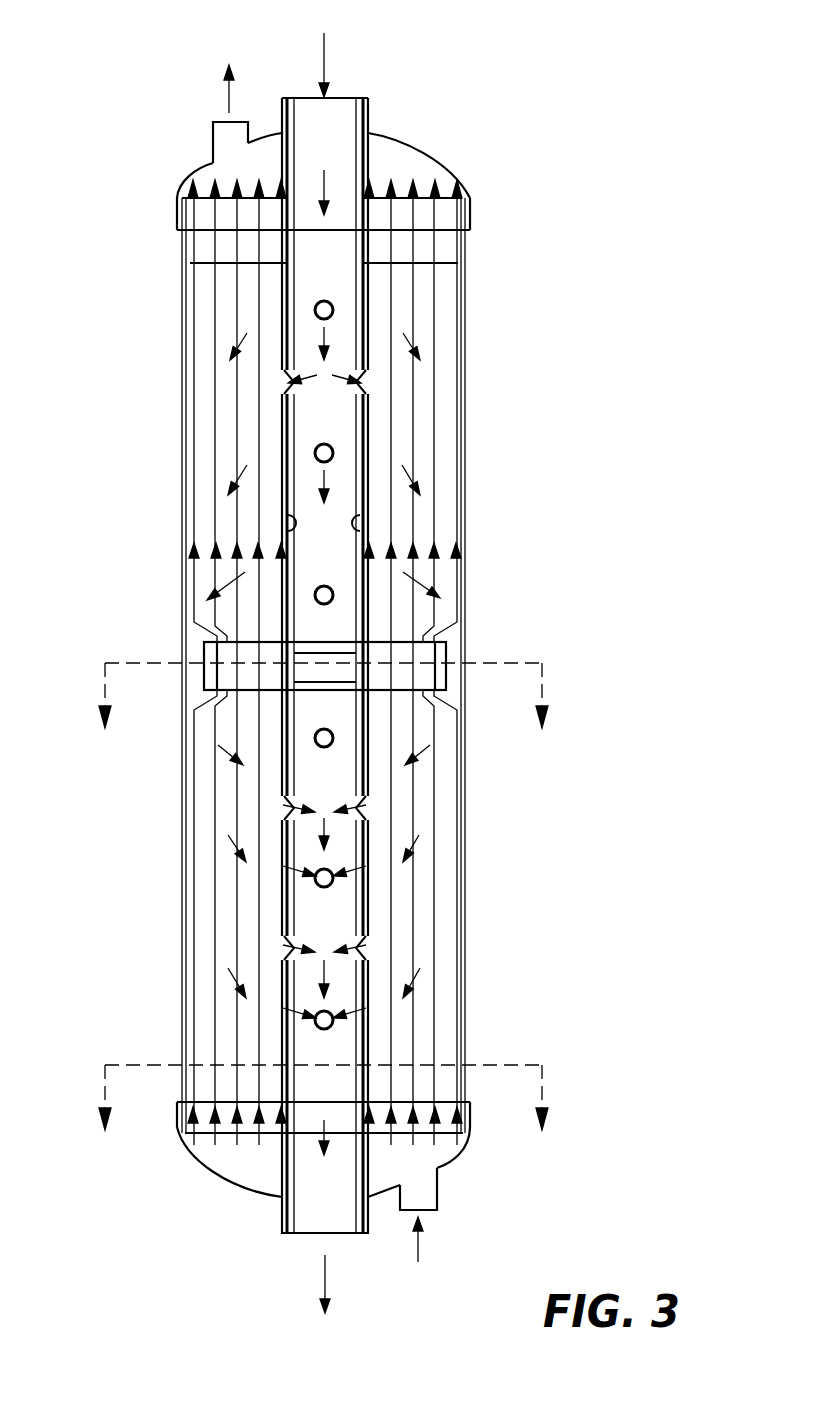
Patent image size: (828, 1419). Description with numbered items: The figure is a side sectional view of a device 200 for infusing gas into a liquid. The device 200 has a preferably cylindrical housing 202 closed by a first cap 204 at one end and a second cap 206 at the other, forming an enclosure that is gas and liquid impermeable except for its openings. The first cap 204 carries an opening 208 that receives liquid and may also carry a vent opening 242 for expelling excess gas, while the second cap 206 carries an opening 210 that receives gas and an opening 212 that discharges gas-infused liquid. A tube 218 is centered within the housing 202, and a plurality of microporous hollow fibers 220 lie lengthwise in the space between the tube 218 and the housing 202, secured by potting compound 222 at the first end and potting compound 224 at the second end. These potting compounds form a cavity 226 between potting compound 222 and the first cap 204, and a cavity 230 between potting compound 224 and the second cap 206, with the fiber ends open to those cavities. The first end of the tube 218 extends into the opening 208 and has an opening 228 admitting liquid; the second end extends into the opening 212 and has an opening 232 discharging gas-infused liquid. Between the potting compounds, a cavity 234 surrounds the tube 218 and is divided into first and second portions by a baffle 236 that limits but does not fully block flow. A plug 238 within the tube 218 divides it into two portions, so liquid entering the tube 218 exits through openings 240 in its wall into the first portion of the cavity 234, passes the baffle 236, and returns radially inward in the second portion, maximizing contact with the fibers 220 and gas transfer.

The device 200 is at (518, 46).
The housing 202 is at (183, 578).
The first cap 204 is at (447, 165).
The second cap 206 is at (460, 1150).
The opening 208 is at (368, 110).
The opening 210 is at (437, 1207).
The opening 212 is at (282, 1222).
The tube 218 is at (287, 442).
The microporous hollow fibers 220 is at (413, 408).
The potting compound 222 is at (423, 247).
The potting compound 224 is at (228, 1126).
The cavity 226 is at (273, 175).
The opening 228 is at (343, 98).
The cavity 230 is at (273, 1176).
The opening 232 is at (300, 1233).
The cavity 234 is at (222, 393).
The baffle 236 is at (400, 640).
The plug 238 is at (307, 670).
The openings 240 is at (290, 955).
The vent opening 242 is at (212, 138).